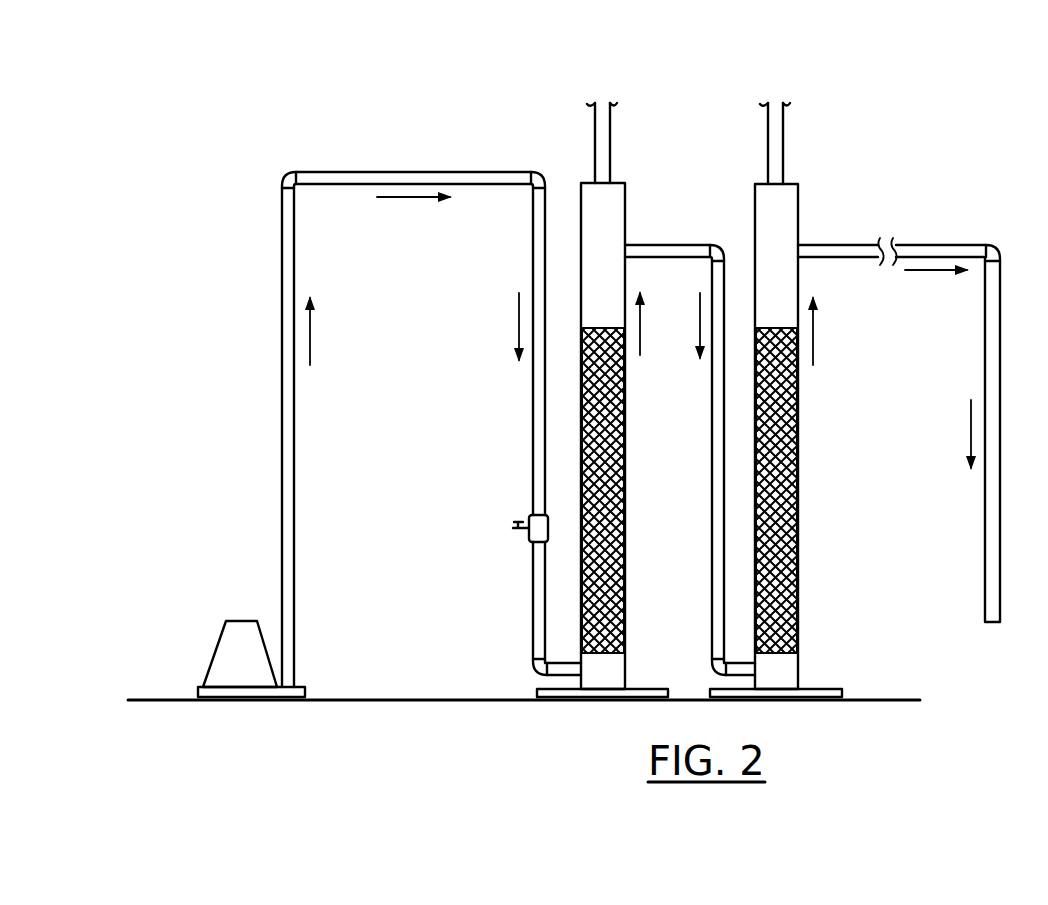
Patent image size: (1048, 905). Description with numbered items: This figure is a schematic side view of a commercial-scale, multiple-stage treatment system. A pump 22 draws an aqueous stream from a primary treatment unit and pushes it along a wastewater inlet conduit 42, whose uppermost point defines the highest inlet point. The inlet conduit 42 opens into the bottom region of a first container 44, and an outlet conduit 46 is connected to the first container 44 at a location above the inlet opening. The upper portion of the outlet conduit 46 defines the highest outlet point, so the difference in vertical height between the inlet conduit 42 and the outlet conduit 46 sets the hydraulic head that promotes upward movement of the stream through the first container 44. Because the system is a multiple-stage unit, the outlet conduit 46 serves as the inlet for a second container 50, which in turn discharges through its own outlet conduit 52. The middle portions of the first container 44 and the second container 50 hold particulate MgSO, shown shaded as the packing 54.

The pump 22 is at (226, 654).
The wastewater inlet conduit 42 is at (493, 175).
The first container 44 is at (613, 674).
The outlet conduit 46 is at (669, 249).
The second container 50 is at (800, 590).
The outlet conduit 52 is at (841, 249).
The particulate MgSO 54 is at (626, 512).